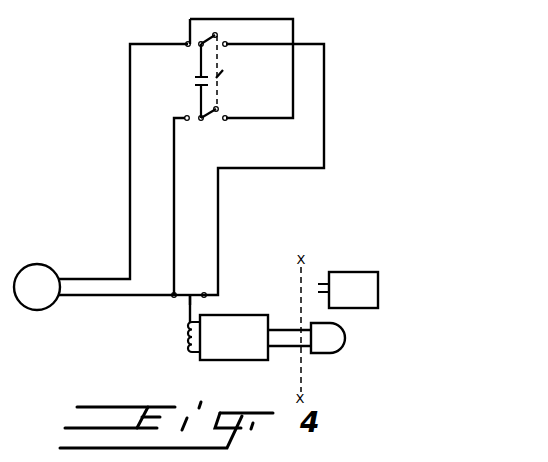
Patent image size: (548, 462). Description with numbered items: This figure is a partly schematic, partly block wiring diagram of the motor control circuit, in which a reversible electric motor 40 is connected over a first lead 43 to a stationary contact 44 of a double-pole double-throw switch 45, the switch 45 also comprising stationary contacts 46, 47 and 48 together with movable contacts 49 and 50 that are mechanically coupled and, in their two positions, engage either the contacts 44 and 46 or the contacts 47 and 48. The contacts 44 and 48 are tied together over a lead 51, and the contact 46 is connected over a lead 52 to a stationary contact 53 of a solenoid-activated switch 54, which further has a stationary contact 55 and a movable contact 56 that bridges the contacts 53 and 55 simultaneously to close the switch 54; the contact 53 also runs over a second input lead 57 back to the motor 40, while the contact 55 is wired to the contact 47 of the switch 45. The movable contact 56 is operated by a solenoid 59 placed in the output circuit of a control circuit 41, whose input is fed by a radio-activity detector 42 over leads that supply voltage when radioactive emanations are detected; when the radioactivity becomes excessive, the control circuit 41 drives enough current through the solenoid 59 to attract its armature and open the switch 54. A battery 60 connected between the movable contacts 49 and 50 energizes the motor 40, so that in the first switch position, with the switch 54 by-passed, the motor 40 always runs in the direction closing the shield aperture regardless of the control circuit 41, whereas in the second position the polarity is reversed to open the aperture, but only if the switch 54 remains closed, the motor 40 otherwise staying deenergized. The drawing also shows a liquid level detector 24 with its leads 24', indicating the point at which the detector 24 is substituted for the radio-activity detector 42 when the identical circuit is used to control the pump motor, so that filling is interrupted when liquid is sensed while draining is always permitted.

The liquid level detector 24 is at (370, 290).
The leads 24' is at (324, 273).
The reversible electric motor 40 is at (33, 263).
The control circuit 41 is at (260, 360).
The radio-activity detector 42 is at (283, 334).
The first lead 43 is at (110, 277).
The stationary contact 44 is at (186, 42).
The double-pole double-throw switch 45 is at (222, 13).
The stationary contact 46 is at (203, 121).
The stationary contact 47 is at (226, 42).
The stationary contact 48 is at (227, 121).
The movable contact 49 is at (214, 34).
The movable contact 50 is at (219, 109).
The lead 51 is at (294, 32).
The lead 52 is at (174, 116).
The stationary contact 53 is at (170, 292).
The solenoid-activated switch 54 is at (182, 278).
The stationary contact 55 is at (208, 295).
The movable contact 56 is at (181, 302).
The second input lead 57 is at (113, 297).
The solenoid 59 is at (195, 353).
The battery 60 is at (200, 84).